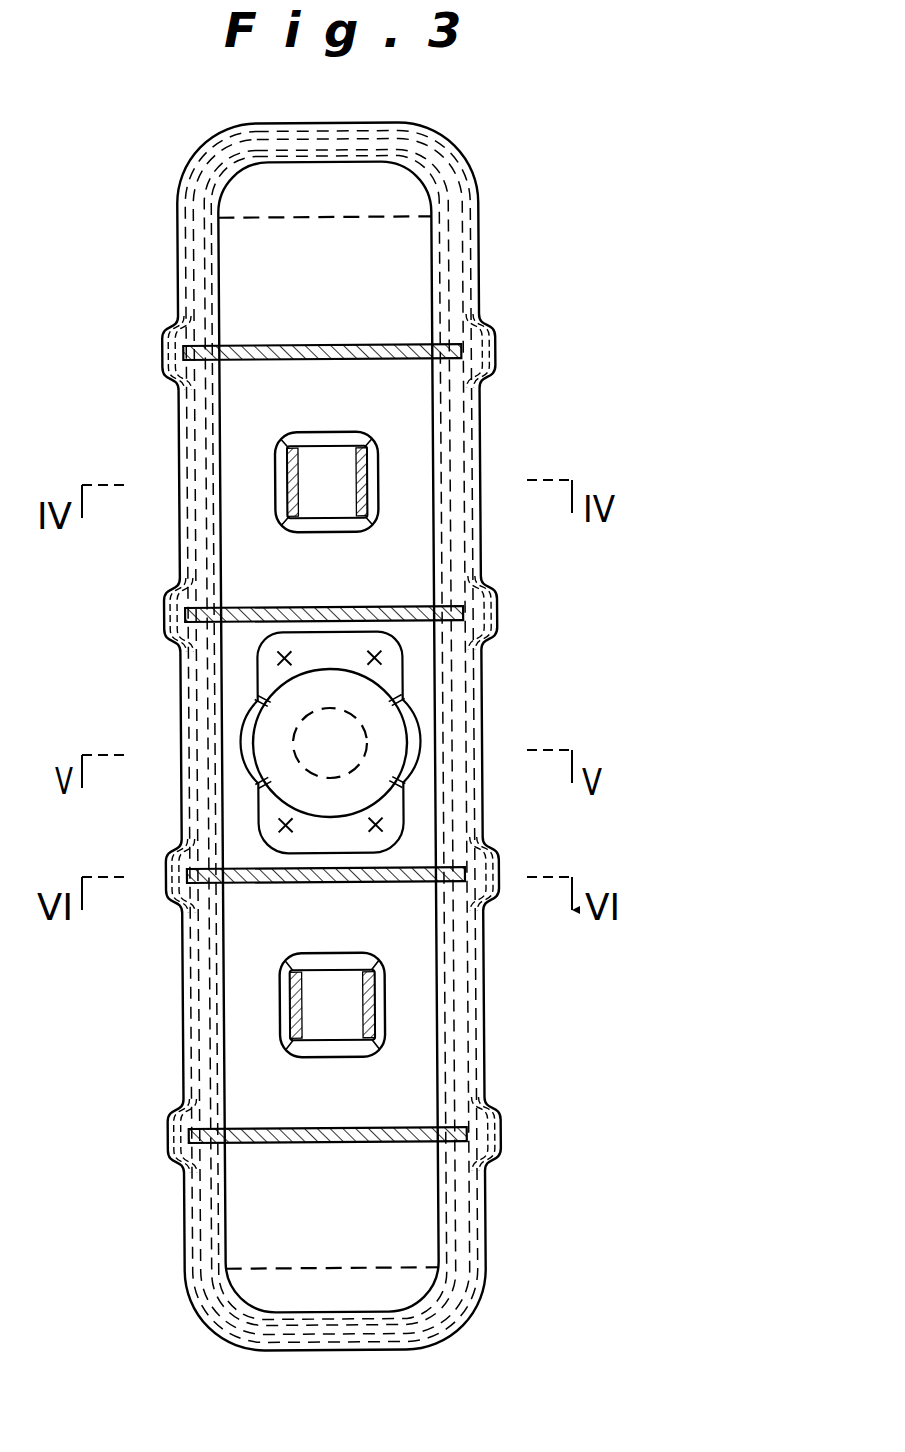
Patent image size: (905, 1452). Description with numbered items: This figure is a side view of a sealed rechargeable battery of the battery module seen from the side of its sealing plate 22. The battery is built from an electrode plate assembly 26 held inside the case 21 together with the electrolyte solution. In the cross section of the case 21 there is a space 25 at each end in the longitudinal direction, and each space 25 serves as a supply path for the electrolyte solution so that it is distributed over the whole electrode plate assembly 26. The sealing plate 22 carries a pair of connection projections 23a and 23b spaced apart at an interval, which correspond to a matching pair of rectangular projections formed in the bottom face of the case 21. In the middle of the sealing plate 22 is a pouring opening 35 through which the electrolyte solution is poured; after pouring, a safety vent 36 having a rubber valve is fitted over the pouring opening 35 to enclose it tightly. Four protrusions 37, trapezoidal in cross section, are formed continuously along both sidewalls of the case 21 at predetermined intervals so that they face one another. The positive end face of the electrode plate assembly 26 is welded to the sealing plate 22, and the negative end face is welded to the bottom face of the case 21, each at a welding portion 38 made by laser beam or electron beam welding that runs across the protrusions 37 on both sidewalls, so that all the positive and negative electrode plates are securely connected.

The case 21 is at (178, 540).
The sealing plate 22 is at (377, 303).
The connection projection 23a is at (333, 480).
The connection projection 23b is at (333, 1000).
The space 25 is at (330, 190).
The electrode plate assembly 26 is at (380, 403).
The pouring opening 35 is at (313, 713).
The safety vent 36 is at (423, 720).
The protrusion 37 is at (165, 350).
The welding portion 38 is at (267, 358).